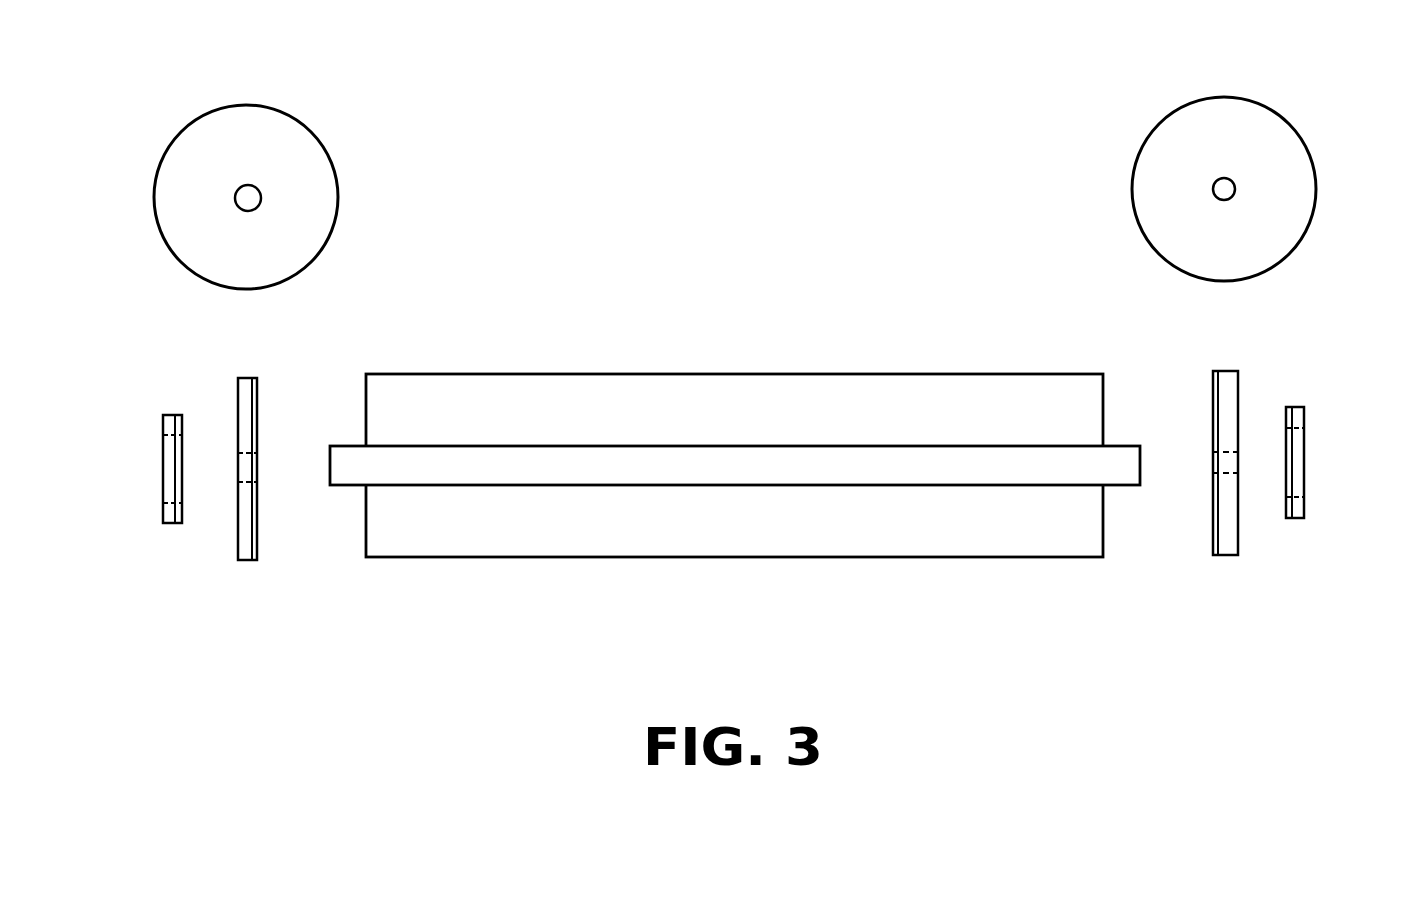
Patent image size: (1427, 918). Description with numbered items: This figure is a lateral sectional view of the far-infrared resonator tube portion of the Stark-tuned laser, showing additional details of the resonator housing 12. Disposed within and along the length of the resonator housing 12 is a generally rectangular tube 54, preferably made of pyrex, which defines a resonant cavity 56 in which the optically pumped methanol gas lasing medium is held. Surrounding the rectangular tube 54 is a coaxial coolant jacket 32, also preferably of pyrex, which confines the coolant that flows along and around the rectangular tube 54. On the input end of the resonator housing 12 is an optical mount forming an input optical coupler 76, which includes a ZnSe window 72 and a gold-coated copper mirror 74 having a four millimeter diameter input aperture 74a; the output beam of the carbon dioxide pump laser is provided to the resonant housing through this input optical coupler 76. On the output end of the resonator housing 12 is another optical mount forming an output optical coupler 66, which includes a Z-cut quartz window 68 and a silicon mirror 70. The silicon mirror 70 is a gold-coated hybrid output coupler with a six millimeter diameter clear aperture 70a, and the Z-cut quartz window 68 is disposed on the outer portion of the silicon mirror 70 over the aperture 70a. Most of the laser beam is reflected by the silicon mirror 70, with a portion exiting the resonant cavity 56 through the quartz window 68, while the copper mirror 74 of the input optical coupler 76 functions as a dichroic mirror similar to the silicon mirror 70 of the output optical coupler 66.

The resonator housing 12 is at (848, 592).
The coolant jacket 32 is at (625, 374).
The rectangular tube 54 is at (667, 446).
The resonant cavity 56 is at (1017, 419).
The output optical coupler 66 is at (201, 581).
The Z-cut quartz window 68 is at (163, 453).
The silicon mirror 70 is at (282, 110).
The clear aperture 70a is at (238, 209).
The ZnSe window 72 is at (1298, 407).
The copper mirror 74 is at (1268, 102).
The input aperture 74a is at (1234, 194).
The input optical coupler 76 is at (1292, 565).